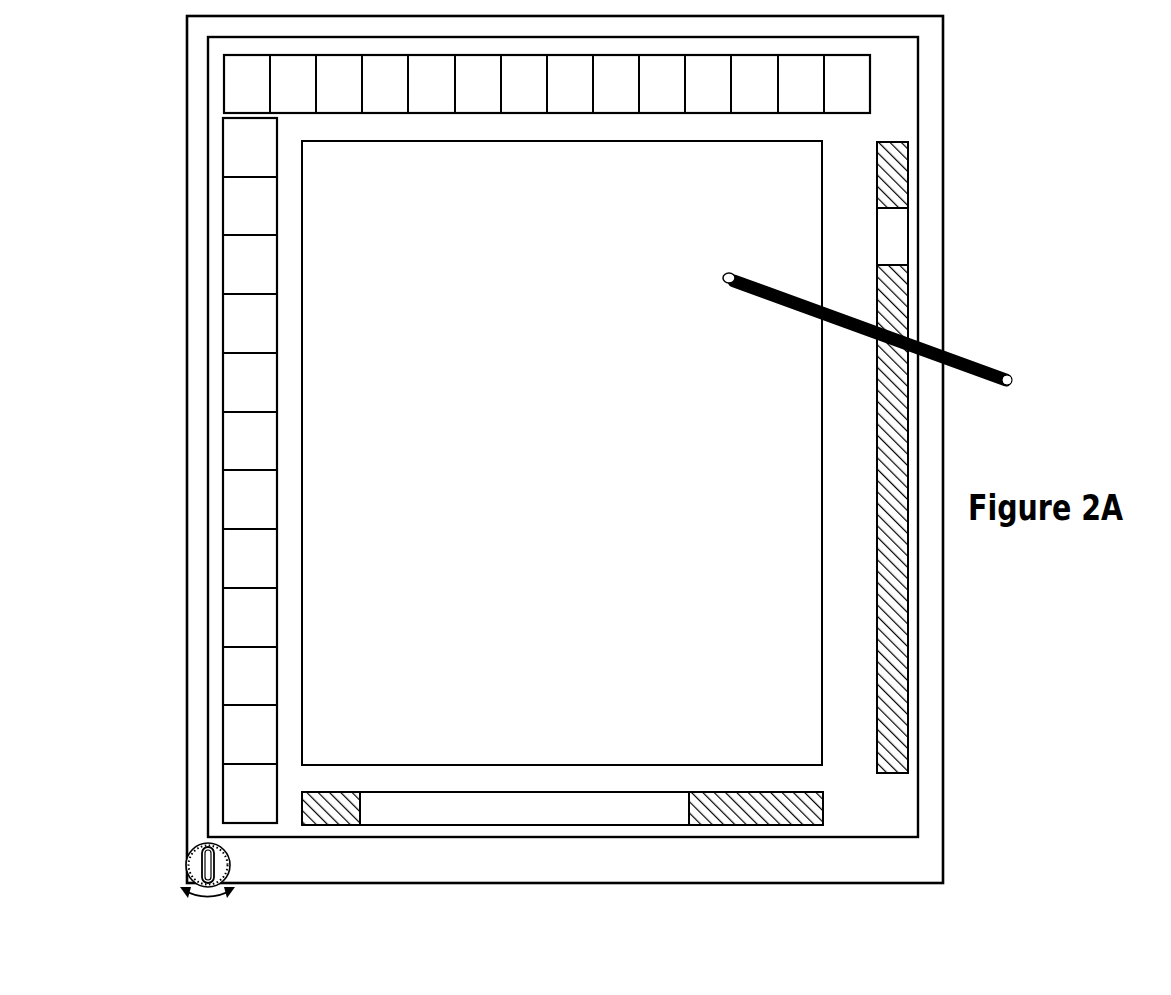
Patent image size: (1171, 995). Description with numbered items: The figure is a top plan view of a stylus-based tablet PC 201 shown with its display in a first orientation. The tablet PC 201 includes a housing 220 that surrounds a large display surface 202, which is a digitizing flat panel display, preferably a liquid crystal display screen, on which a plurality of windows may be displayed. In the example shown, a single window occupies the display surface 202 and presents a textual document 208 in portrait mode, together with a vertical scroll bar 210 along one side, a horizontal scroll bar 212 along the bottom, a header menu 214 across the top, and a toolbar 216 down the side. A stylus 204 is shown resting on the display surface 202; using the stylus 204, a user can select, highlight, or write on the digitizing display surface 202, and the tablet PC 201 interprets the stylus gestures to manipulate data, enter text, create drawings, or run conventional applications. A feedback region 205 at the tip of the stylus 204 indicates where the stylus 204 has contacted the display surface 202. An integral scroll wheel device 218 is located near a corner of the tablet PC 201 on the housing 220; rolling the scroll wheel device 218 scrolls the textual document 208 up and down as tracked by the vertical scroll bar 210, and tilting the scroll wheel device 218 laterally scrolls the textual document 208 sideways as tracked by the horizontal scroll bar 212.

The tablet PC 201 is at (185, 638).
The display surface 202 is at (890, 97).
The stylus 204 is at (972, 357).
The feedback region 205 is at (733, 276).
The textual document 208 is at (803, 700).
The vertical scroll bar 210 is at (890, 575).
The horizontal scroll bar 212 is at (825, 808).
The header menu 214 is at (270, 85).
The toolbar 216 is at (257, 446).
The scroll wheel device 218 is at (187, 858).
The housing 220 is at (184, 550).